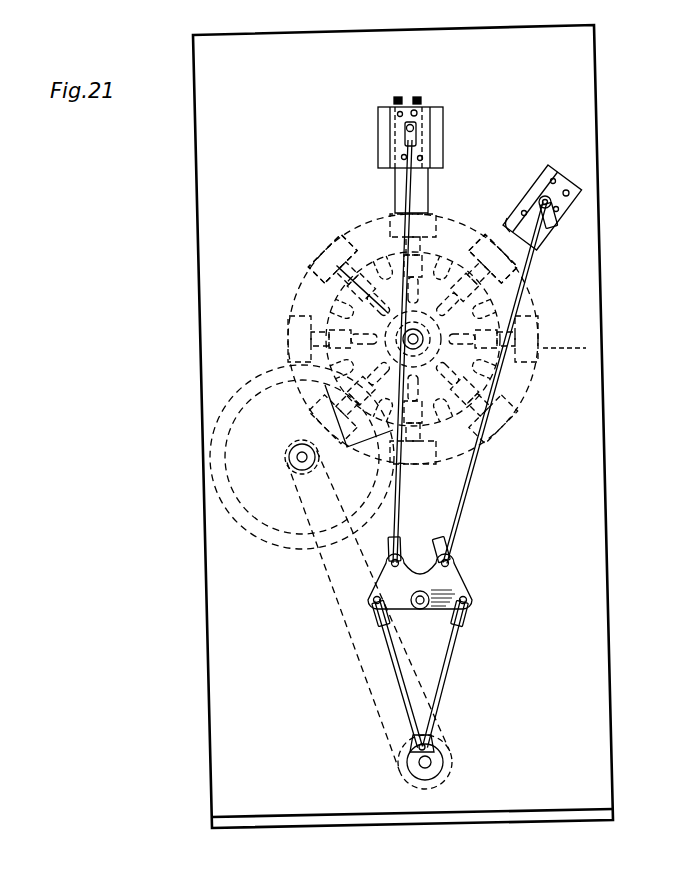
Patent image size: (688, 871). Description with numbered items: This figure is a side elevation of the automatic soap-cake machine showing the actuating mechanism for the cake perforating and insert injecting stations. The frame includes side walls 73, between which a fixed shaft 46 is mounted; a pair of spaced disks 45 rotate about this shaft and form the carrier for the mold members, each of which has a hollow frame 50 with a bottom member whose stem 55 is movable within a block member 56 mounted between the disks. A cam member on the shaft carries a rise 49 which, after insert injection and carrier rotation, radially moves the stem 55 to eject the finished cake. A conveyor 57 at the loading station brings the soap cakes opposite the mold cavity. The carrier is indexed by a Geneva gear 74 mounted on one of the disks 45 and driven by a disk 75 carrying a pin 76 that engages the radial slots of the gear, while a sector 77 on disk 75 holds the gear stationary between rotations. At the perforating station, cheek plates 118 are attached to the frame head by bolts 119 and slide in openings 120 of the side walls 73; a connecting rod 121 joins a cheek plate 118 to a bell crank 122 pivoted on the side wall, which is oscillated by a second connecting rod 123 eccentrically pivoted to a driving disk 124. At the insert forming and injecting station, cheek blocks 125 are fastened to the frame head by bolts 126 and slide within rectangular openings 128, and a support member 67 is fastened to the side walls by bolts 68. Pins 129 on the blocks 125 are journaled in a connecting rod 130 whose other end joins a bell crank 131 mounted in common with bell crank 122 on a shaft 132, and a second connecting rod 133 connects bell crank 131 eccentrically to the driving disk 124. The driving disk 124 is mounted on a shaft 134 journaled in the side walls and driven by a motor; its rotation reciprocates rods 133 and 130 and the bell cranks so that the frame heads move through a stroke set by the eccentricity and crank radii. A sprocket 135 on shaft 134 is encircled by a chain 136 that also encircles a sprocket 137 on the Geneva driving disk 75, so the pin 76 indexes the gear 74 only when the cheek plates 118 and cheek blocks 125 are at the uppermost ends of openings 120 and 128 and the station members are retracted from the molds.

The side walls 73 is at (589, 79).
The disks 45 is at (299, 292).
The Geneva gear 74 is at (366, 258).
The block member 56 is at (340, 252).
The rise 49 is at (330, 333).
The stem 55 is at (536, 313).
The conveyor 57 is at (586, 345).
The hollow frame 50 is at (510, 425).
The fixed shaft 46 is at (420, 345).
The cheek blocks 125 is at (378, 140).
The bolts 126 is at (418, 113).
The pins 129 is at (414, 128).
The support member 67 is at (400, 97).
The bolts 68 is at (420, 97).
The rectangular openings 128 is at (428, 191).
The connecting rod 130 is at (399, 496).
The cheek plates 118 is at (523, 192).
The bolts 119 is at (567, 190).
The openings 120 is at (512, 214).
The connecting rod 121 is at (528, 272).
The disk 75 is at (212, 440).
The sector 77 is at (247, 511).
The pin 76 is at (293, 442).
The sprocket 137 is at (291, 466).
The chain 136 is at (337, 606).
The bell crank 122 is at (450, 575).
The shaft 132 is at (420, 610).
The bell crank 131 is at (381, 621).
The second connecting rod 123 is at (446, 676).
The second connecting rod 133 is at (403, 700).
The driving disk 124 is at (441, 755).
The shaft 134 is at (423, 764).
The sprocket 135 is at (445, 783).